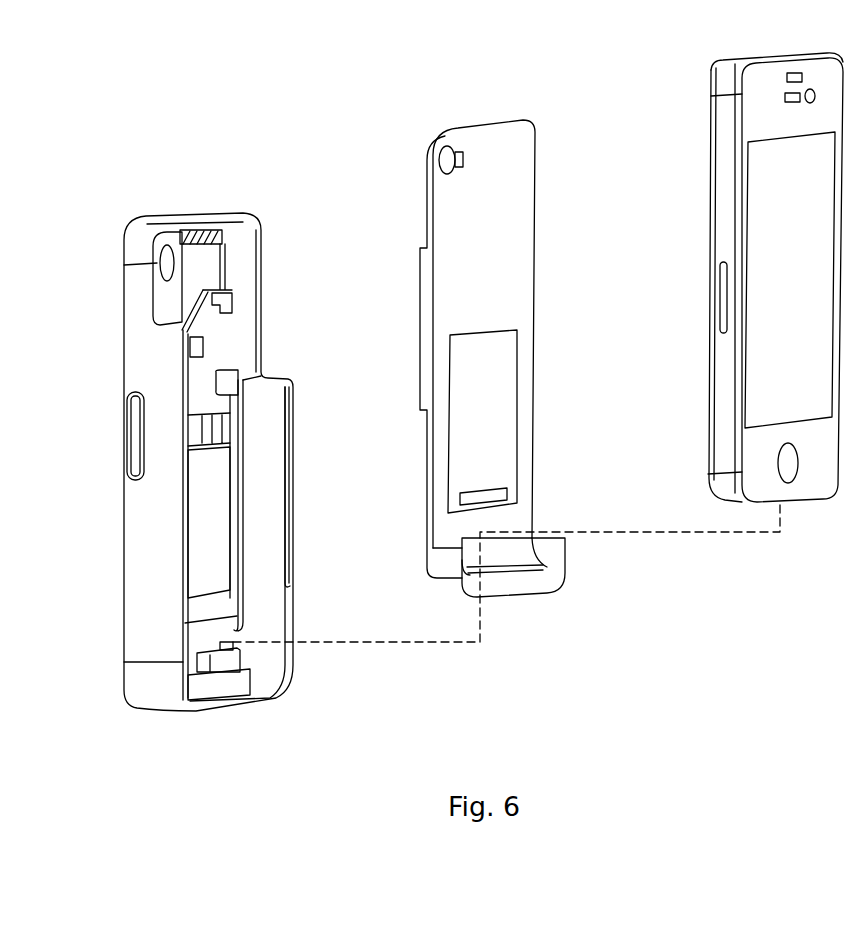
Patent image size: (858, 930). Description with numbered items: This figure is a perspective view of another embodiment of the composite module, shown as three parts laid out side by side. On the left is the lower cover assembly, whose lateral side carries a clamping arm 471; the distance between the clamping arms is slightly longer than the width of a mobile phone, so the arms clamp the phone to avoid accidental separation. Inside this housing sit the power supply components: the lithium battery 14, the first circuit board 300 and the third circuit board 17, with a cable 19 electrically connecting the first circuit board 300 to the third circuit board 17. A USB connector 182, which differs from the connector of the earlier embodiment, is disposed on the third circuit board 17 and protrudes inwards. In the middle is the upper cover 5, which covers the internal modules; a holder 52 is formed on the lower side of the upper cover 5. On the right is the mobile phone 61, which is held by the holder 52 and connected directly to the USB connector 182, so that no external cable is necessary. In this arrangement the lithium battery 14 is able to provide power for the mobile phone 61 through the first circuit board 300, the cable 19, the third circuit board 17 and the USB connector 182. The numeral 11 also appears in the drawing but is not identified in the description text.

The upper cover 5 is at (490, 152).
The case body top portion 11 is at (225, 262).
The lithium battery 14 is at (217, 568).
The third circuit board 17 is at (193, 660).
The cable 19 is at (233, 625).
The holder 52 is at (512, 582).
The mobile phone 61 is at (726, 158).
The USB connector 182 is at (240, 683).
The first circuit board 300 is at (222, 352).
The clamping arm 471 is at (290, 510).